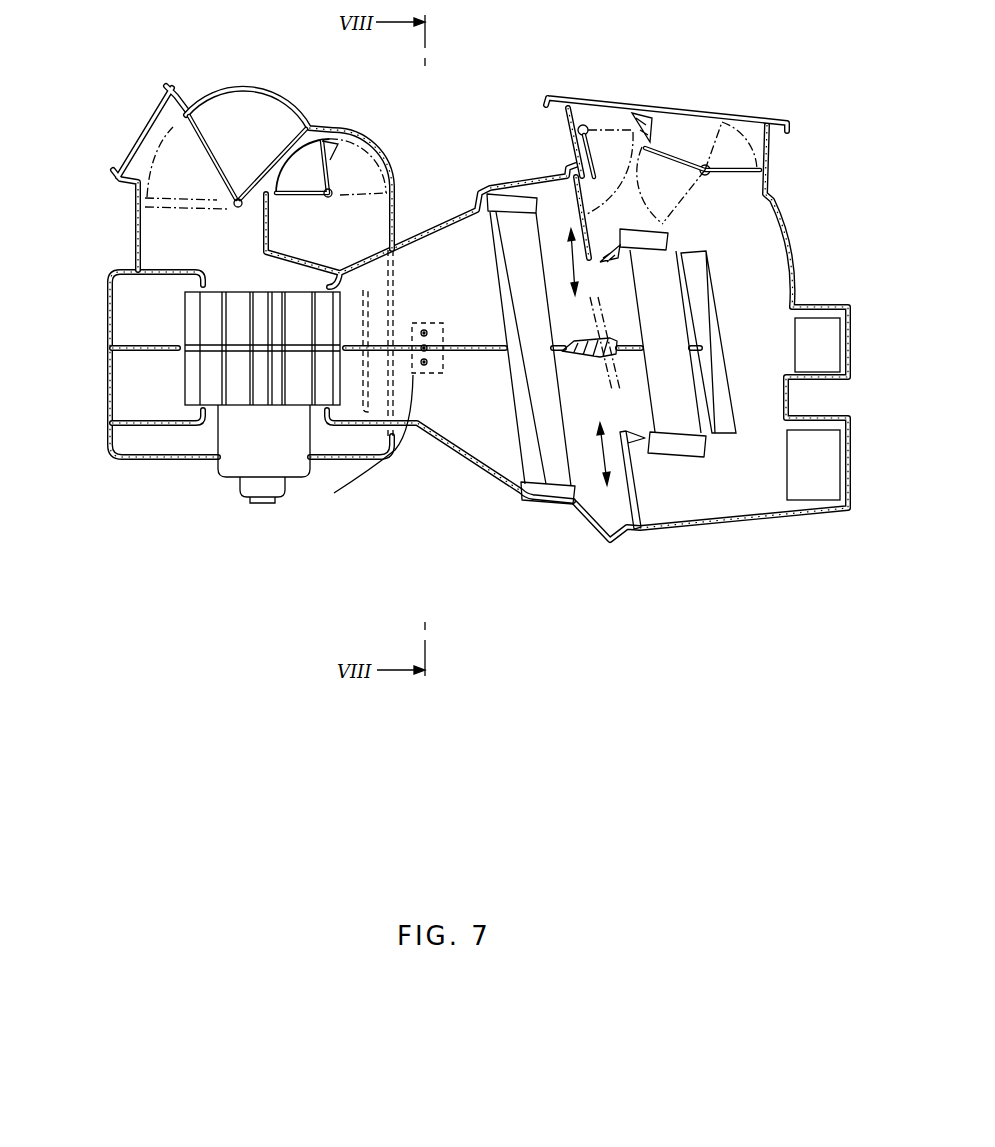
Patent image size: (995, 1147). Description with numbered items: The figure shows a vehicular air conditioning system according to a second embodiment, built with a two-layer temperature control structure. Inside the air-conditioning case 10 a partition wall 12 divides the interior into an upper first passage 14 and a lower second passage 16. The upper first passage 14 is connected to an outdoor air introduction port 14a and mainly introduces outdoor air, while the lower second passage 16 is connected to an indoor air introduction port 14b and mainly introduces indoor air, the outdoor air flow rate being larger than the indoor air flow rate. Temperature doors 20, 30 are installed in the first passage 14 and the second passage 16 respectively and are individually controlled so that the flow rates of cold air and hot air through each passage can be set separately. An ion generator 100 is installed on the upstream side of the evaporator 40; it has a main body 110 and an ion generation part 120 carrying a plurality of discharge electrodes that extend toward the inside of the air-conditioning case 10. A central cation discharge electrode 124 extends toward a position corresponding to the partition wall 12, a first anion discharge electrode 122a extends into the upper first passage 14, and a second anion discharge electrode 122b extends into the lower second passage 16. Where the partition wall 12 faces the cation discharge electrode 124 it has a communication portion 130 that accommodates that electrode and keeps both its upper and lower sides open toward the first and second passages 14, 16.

The air-conditioning case 10 is at (550, 465).
The partition wall 12 is at (492, 335).
The first passage 14 is at (457, 277).
The outdoor air introduction port 14a is at (148, 140).
The indoor air introduction port 14b is at (360, 133).
The second passage 16 is at (508, 436).
The temperature door 20 is at (600, 185).
The temperature door 30 is at (640, 475).
The evaporator 40 is at (580, 463).
The ion generator 100 is at (388, 344).
The main body 110 is at (334, 493).
The ion generation part 120 is at (411, 464).
The first anion discharge electrode 122a is at (428, 333).
The second anion discharge electrode 122b is at (426, 365).
The cation discharge electrode 124 is at (427, 350).
The communication portion 130 is at (413, 322).